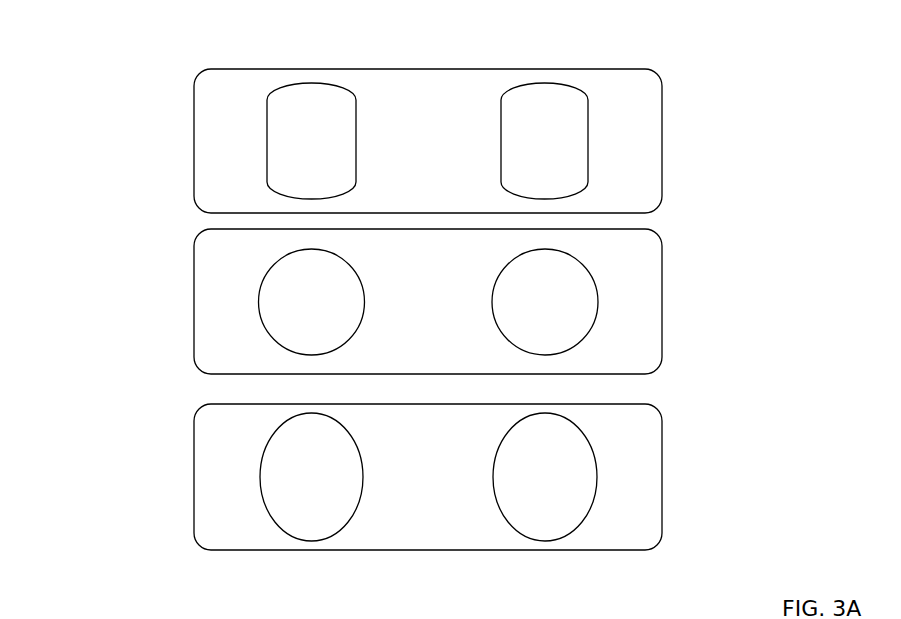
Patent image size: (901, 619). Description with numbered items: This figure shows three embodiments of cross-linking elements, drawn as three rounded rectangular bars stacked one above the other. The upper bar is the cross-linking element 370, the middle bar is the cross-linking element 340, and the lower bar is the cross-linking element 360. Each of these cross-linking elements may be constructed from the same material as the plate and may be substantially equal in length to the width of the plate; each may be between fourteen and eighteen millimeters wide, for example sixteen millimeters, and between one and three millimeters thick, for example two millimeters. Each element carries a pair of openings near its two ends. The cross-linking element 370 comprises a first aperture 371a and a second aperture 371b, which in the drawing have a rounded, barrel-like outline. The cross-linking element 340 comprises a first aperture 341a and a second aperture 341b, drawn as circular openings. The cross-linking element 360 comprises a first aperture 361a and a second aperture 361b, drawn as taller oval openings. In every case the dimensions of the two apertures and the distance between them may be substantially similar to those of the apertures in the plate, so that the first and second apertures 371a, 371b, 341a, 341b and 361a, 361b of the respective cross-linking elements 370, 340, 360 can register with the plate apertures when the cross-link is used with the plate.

The cross-linking element 370 is at (632, 185).
The first aperture 371a is at (296, 141).
The second aperture 371b is at (558, 142).
The cross-linking element 340 is at (618, 346).
The first aperture 341a is at (283, 302).
The second aperture 341b is at (574, 302).
The cross-linking element 360 is at (632, 520).
The first aperture 361a is at (267, 477).
The second aperture 361b is at (573, 462).